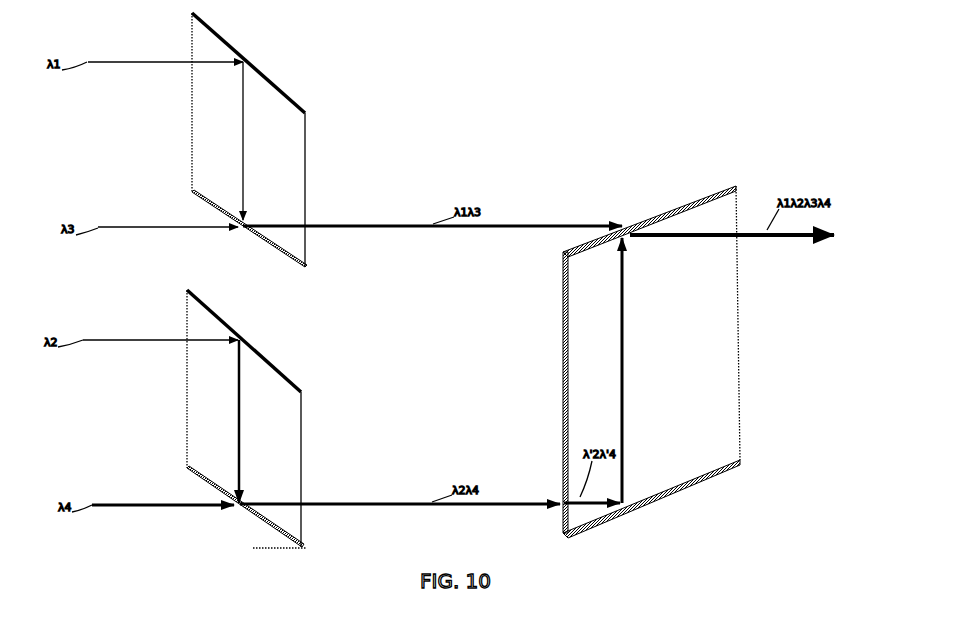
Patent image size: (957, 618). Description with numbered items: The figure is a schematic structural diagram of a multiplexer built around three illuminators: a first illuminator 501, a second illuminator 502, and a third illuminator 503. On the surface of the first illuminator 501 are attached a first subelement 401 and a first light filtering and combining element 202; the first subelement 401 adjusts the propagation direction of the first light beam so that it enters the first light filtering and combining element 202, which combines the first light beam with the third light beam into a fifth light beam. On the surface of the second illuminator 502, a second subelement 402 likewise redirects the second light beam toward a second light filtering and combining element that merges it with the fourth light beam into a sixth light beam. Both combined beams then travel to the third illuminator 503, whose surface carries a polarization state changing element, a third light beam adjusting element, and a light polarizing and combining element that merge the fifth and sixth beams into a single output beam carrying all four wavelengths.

The first light filtering and combining element 202 is at (203, 197).
The first subelement 401 is at (282, 92).
The second subelement 402 is at (277, 368).
The first illuminator 501 is at (267, 280).
The second illuminator 502 is at (278, 419).
The third illuminator 503 is at (722, 388).